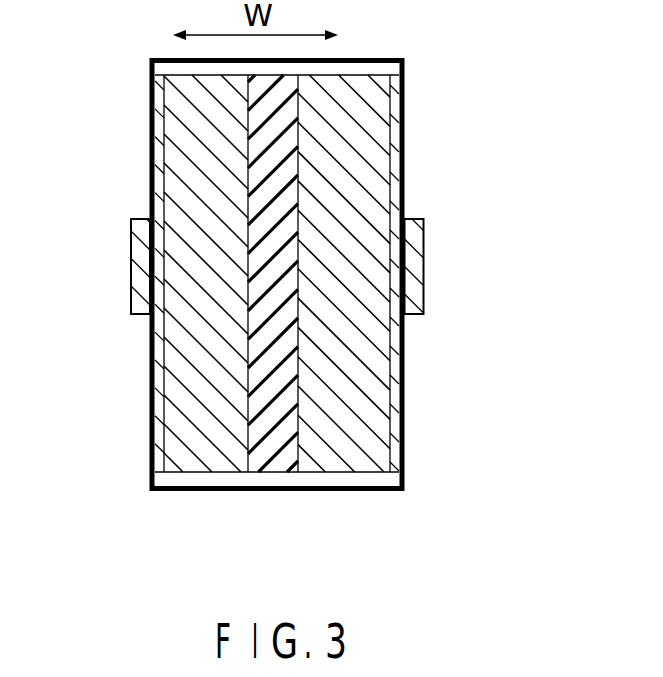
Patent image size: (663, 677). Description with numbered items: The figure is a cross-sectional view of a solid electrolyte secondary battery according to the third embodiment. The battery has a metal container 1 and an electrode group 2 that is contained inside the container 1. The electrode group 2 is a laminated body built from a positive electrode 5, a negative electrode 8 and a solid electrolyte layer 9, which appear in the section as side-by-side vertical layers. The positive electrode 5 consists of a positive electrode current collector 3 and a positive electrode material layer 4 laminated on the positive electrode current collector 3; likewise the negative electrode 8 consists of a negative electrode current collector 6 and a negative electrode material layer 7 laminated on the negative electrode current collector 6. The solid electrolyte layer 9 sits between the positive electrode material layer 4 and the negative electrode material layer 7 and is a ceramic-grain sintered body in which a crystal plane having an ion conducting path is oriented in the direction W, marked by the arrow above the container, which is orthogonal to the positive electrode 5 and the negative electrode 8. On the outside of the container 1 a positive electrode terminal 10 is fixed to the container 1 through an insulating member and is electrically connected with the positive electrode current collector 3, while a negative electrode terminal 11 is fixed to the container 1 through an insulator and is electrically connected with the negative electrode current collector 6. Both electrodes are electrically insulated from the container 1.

The metal container 1 is at (275, 299).
The electrode group 2 is at (370, 70).
The positive electrode current collector 3 is at (397, 470).
The positive electrode material layer 4 is at (347, 470).
The positive electrode 5 is at (351, 336).
The negative electrode current collector 6 is at (162, 473).
The negative electrode material layer 7 is at (203, 470).
The negative electrode 8 is at (196, 336).
The solid electrolyte layer 9 is at (275, 472).
The positive electrode terminal 10 is at (423, 248).
The negative electrode terminal 11 is at (130, 280).